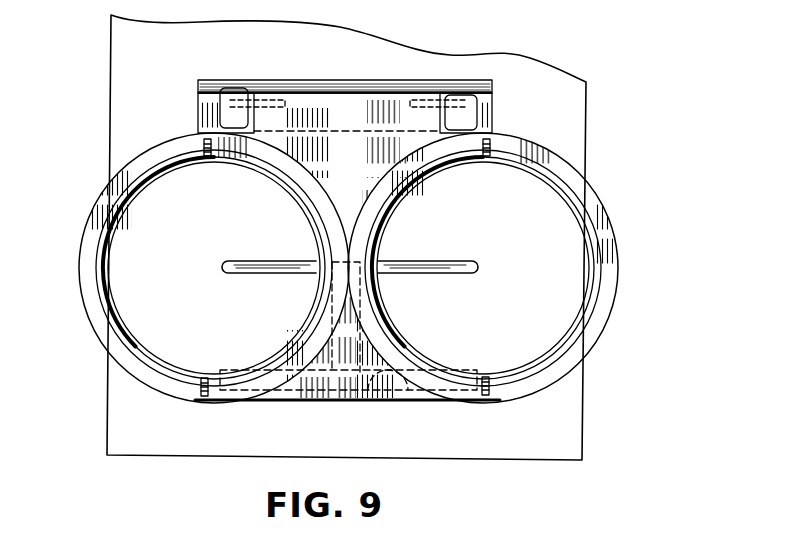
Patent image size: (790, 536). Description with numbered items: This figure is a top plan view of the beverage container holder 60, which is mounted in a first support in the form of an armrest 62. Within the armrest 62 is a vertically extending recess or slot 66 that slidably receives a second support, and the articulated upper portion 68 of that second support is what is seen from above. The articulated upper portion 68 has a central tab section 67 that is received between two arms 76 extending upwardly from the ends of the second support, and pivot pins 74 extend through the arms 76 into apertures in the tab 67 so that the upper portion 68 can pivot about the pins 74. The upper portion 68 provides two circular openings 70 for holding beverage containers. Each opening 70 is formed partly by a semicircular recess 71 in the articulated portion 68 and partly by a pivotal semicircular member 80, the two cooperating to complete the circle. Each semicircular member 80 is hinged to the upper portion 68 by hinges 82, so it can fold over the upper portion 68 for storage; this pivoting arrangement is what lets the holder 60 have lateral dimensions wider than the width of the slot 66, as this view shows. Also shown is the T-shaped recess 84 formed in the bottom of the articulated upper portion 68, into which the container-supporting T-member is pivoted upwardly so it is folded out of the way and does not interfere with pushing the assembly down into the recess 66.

The beverage container holder 60 is at (612, 205).
The armrest 62 is at (560, 108).
The slot 66 is at (420, 88).
The central tab section 67 is at (333, 97).
The articulated upper portion 68 is at (357, 200).
The circular opening 70 is at (572, 300).
The semicircular recess 71 is at (312, 290).
The pivot pin 74 is at (234, 85).
The arm 76 is at (227, 118).
The pivotal semicircular member 80 is at (612, 253).
The hinge 82 is at (212, 158).
The T-shaped recess 84 is at (418, 396).